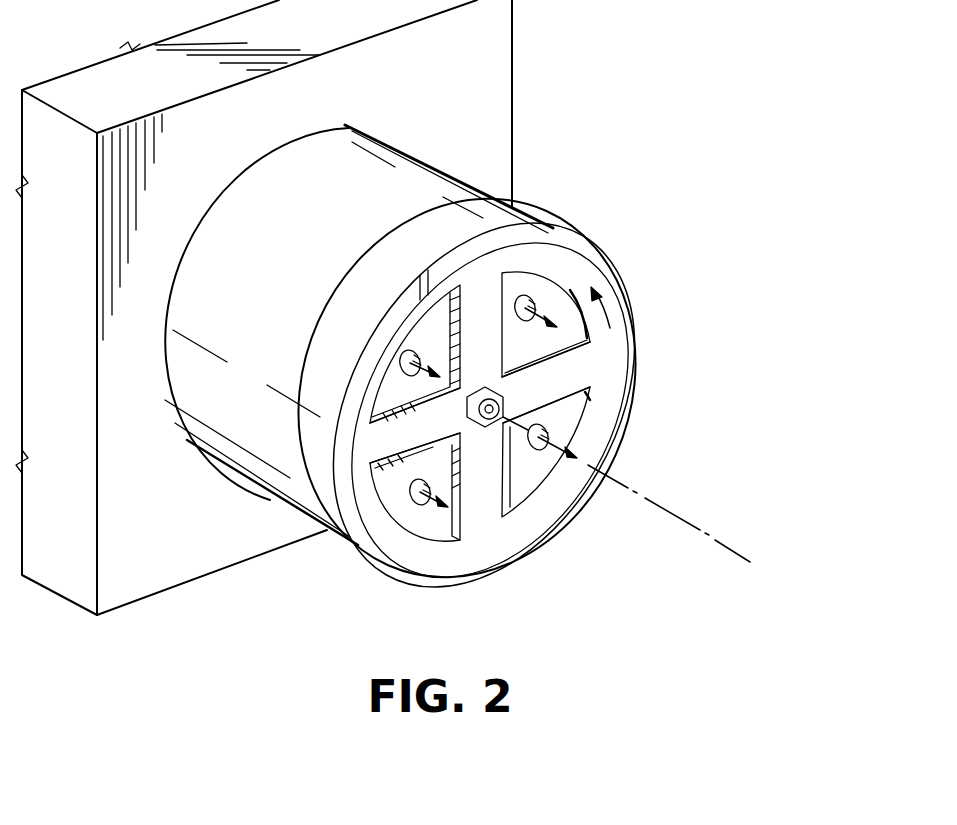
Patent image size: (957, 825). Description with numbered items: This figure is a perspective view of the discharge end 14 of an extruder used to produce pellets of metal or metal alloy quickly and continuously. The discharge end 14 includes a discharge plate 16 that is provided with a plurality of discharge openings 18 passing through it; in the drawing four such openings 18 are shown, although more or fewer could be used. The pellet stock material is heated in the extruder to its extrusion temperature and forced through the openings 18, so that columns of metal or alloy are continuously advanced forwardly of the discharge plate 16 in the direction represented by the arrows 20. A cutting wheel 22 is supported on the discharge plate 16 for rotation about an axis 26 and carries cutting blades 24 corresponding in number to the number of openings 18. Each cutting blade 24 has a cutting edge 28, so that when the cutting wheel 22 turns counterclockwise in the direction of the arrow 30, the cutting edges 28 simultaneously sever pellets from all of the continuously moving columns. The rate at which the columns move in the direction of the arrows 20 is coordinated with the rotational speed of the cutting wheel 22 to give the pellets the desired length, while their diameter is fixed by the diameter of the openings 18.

The discharge end 14 is at (553, 160).
The discharge plate 16 is at (517, 487).
The discharge openings 18 is at (530, 298).
The arrows 20 is at (562, 294).
The cutting wheel 22 is at (636, 362).
The cutting blades 24 is at (485, 302).
The axis 26 is at (673, 514).
The cutting edge 28 is at (592, 338).
The arrow 30 is at (605, 305).